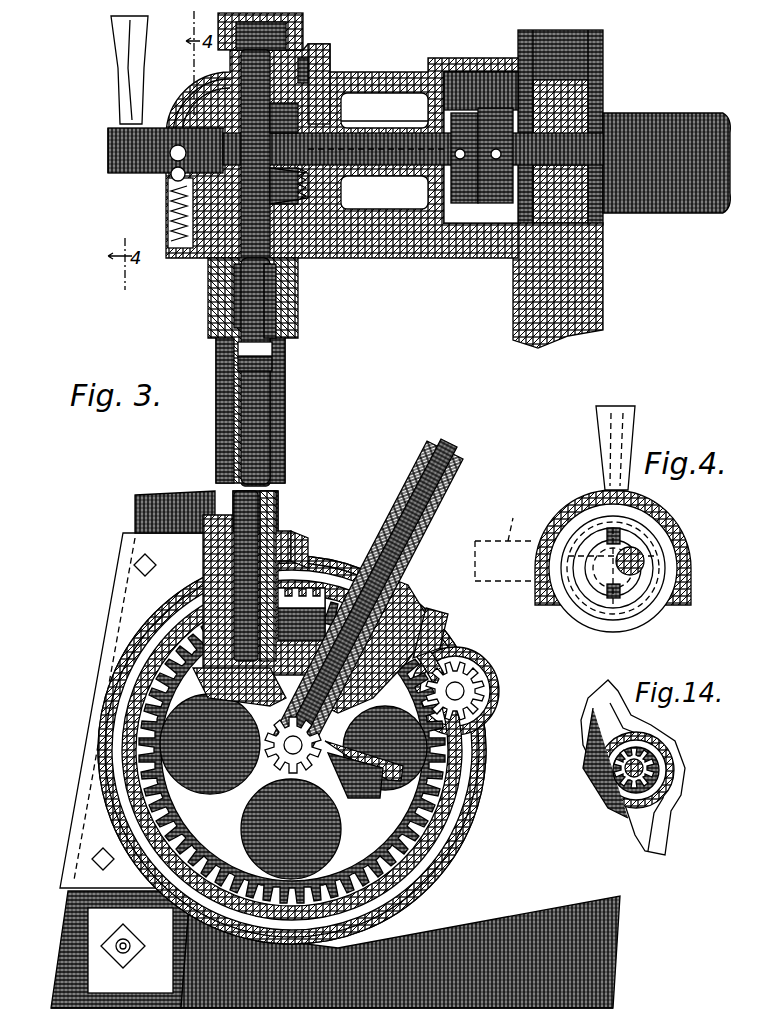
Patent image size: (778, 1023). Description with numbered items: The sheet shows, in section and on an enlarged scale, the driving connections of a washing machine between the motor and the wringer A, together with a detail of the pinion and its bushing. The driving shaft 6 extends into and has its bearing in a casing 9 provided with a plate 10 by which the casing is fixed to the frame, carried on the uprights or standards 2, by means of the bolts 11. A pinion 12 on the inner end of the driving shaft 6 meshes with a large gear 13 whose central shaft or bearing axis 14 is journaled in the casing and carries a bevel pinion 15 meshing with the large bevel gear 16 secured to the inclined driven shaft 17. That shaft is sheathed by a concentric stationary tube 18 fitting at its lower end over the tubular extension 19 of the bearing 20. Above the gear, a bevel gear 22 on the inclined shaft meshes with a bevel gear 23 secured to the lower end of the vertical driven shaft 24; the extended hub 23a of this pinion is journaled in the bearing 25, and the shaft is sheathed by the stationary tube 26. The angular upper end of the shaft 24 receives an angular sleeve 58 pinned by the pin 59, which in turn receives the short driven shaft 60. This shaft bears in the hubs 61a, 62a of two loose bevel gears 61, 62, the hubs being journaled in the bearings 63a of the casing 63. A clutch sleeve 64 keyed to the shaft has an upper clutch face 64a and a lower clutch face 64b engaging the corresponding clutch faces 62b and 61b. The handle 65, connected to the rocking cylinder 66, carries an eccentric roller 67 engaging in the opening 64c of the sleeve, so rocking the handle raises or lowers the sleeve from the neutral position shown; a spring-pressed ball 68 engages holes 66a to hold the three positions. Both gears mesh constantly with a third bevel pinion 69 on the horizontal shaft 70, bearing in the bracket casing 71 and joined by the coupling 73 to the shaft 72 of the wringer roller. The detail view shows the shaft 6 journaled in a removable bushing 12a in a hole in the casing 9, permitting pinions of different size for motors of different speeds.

In FIG. 3, the uprights or standards 2 is at (64, 893).
In FIG. 3, the driving shaft 6 is at (456, 676).
In FIG. 14, the driving shaft 6 is at (640, 750).
In FIG. 3, the casing 9 is at (450, 838).
In FIG. 14, the casing 9 is at (660, 818).
In FIG. 3, the plate 10 is at (122, 598).
In FIG. 3, the bolts 11 is at (126, 556).
In FIG. 3, the pinion 12 is at (484, 711).
In FIG. 14, the pinion 12 is at (665, 782).
In FIG. 14, the bushing 12a is at (650, 762).
In FIG. 3, the large gear 13 is at (440, 780).
In FIG. 14, the large gear 13 is at (612, 798).
In FIG. 3, the central shaft or bearing axis 14 is at (257, 752).
In FIG. 3, the bevel pinion 15 is at (315, 762).
In FIG. 3, the large bevel gear 16 is at (385, 748).
In FIG. 3, the inclined driven shaft 17 is at (402, 526).
In FIG. 3, the stationary tube 18 is at (402, 470).
In FIG. 3, the tubular extension 19 is at (356, 528).
In FIG. 3, the bearing 20 is at (392, 592).
In FIG. 3, the bevel gear 22 is at (365, 652).
In FIG. 3, the bevel gear 23 is at (180, 617).
In FIG. 3, the extended hub 23a is at (271, 508).
In FIG. 3, the vertical driven shaft 24 is at (252, 426).
In FIG. 3, the bearing 25 is at (284, 540).
In FIG. 3, the stationary tube 26 is at (208, 470).
In FIG. 3, the angular-shaped tube or sleeve 58 is at (266, 341).
In FIG. 3, the pin 59 is at (266, 356).
In FIG. 3, the short driven shaft 60 is at (262, 40).
In FIG. 3, the bevel gear 61 is at (318, 222).
In FIG. 3, the hub 61a is at (206, 272).
In FIG. 3, the clutch face 61b is at (312, 200).
In FIG. 3, the bevel gear 62 is at (325, 58).
In FIG. 3, the hub 62a is at (303, 52).
In FIG. 3, the clutch face 62b is at (330, 76).
In FIG. 3, the casing 63 is at (200, 75).
In FIG. 4, the casing 63 is at (660, 596).
In FIG. 3, the bearings 63a is at (202, 252).
In FIG. 3, the clutch sleeve 64 is at (338, 98).
In FIG. 3, the upper clutch face 64a is at (205, 88).
In FIG. 3, the lower clutch face 64b is at (338, 186).
In FIG. 3, the opening 64c is at (413, 149).
In FIG. 3, the handle 65 is at (122, 42).
In FIG. 4, the handle 65 is at (630, 442).
In FIG. 3, the rocking cylinder 66 is at (110, 134).
In FIG. 4, the rocking cylinder 66 is at (602, 588).
In FIG. 3, the holes 66a is at (164, 166).
In FIG. 3, the roller 67 is at (198, 125).
In FIG. 4, the roller 67 is at (635, 550).
In FIG. 3, the spring-pressed ball 68 is at (163, 187).
In FIG. 3, the bevel pinion 69 is at (336, 113).
In FIG. 3, the horizontal shaft 70 is at (378, 140).
In FIG. 3, the bracket casing 71 is at (440, 228).
In FIG. 3, the shaft of the wringer roller 72 is at (556, 143).
In FIG. 3, the coupling 73 is at (474, 195).
In FIG. 3, the wringer A is at (588, 268).